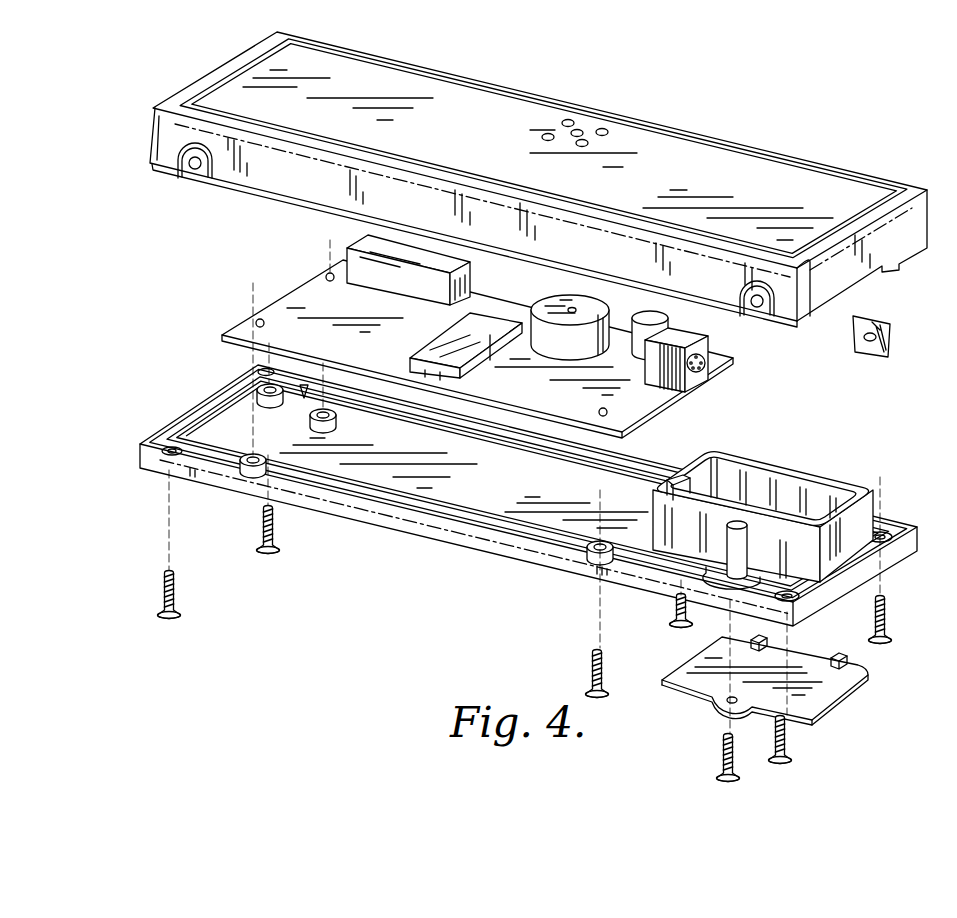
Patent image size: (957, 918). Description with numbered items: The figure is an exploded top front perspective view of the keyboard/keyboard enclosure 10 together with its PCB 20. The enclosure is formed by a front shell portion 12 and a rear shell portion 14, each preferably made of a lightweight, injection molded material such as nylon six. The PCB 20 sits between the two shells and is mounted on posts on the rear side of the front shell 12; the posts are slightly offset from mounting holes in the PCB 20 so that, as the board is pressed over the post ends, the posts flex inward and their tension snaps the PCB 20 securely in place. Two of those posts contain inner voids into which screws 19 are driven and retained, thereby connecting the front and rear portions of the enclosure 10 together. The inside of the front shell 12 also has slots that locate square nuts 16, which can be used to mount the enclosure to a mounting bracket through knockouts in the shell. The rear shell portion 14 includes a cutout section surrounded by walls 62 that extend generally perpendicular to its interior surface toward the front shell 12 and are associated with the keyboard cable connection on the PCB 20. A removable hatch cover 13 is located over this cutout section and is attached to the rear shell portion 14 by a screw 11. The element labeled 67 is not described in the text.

The keyboard/keyboard enclosure 10 is at (355, 670).
The screw 11 is at (722, 757).
The front shell portion 12 is at (353, 177).
The removable hatch cover 13 is at (855, 690).
The rear shell portion 14 is at (253, 425).
The square nuts 16 is at (889, 340).
The screws 19 is at (257, 555).
The PCB 20 is at (343, 317).
The walls 62 is at (710, 533).
The battery compartment 67 is at (697, 477).